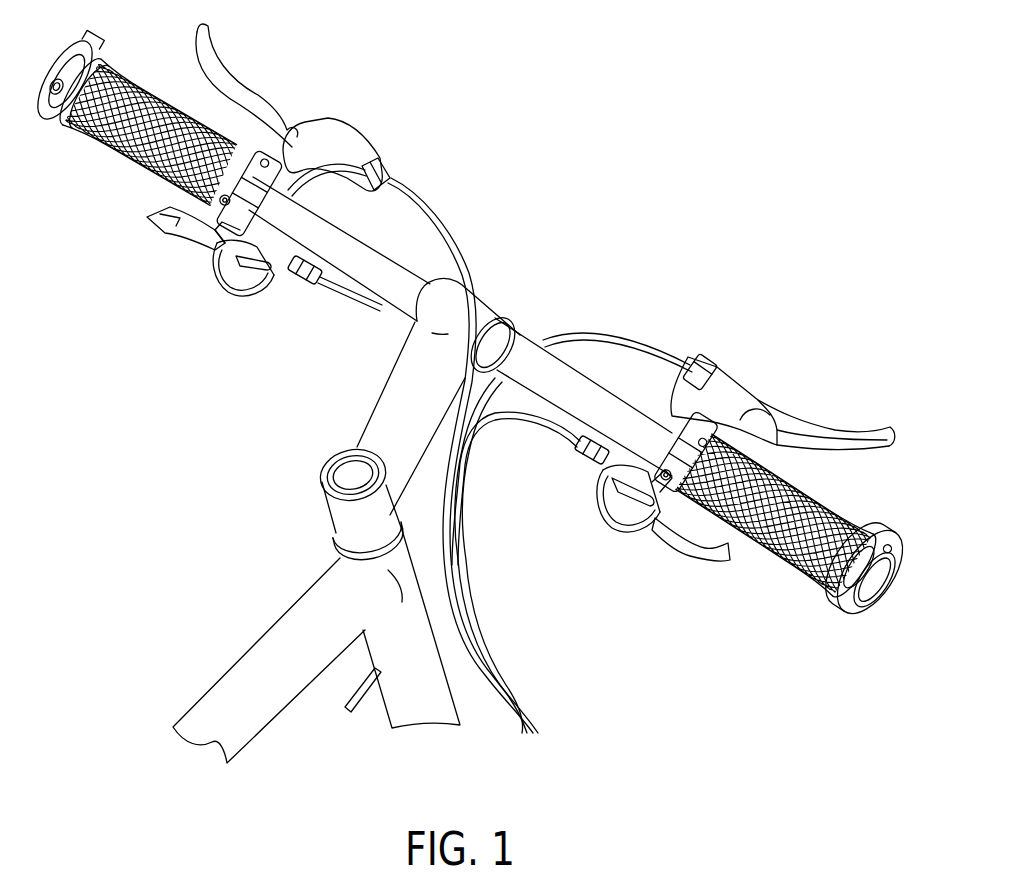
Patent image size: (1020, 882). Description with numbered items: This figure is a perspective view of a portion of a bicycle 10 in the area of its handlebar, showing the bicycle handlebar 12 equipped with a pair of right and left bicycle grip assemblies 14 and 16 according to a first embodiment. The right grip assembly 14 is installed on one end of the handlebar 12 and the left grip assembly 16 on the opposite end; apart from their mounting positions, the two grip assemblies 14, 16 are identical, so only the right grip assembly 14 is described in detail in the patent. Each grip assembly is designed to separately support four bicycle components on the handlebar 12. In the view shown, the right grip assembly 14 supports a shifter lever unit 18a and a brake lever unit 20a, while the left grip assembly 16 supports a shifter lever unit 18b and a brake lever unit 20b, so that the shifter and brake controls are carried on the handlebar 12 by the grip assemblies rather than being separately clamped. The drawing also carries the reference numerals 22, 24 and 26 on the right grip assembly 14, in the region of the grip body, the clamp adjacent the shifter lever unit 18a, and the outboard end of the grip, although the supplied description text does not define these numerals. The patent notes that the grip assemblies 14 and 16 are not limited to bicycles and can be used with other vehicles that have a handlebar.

The bicycle 10 is at (205, 471).
The bicycle handlebar 12 is at (400, 246).
The right grip assembly 14 is at (769, 600).
The left grip assembly 16 is at (100, 182).
The shifter lever unit 18a is at (592, 539).
The shifter lever unit 18b is at (219, 304).
The brake lever unit 20a is at (757, 360).
The brake lever unit 20b is at (356, 128).
The grip body 22 is at (815, 485).
The clamp 24 is at (681, 401).
The end cap 26 is at (882, 522).